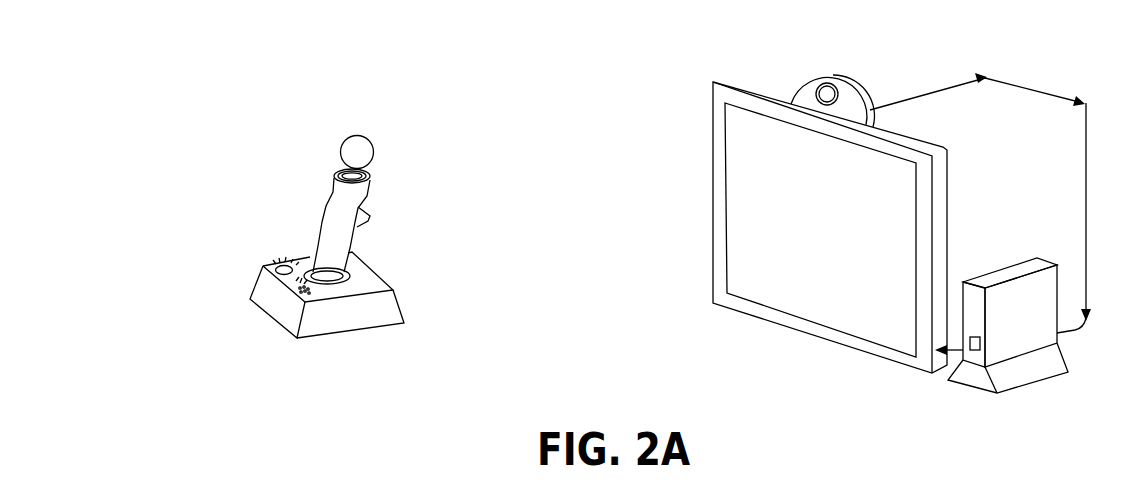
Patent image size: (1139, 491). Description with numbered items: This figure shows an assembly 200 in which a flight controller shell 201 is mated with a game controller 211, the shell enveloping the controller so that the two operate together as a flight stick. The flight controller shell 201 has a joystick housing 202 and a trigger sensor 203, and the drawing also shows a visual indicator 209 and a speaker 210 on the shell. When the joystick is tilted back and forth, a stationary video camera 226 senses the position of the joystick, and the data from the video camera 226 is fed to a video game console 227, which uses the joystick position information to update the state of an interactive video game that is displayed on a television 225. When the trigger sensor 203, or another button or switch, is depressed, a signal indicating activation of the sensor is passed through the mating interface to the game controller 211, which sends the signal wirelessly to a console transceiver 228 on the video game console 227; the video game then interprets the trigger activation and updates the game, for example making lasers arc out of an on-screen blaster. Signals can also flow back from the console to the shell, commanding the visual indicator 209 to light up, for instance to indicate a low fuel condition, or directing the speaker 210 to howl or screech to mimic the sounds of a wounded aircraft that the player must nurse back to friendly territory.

The assembly 200 is at (286, 108).
The flight controller shell 201 is at (330, 203).
The joystick housing 202 is at (324, 218).
The trigger sensor 203 is at (369, 217).
The visual indicator 209 is at (252, 305).
The speaker 210 is at (287, 292).
The game controller 211 is at (372, 142).
The television 225 is at (743, 82).
The video camera 226 is at (856, 86).
The video game console 227 is at (1008, 301).
The console transceiver 228 is at (982, 345).